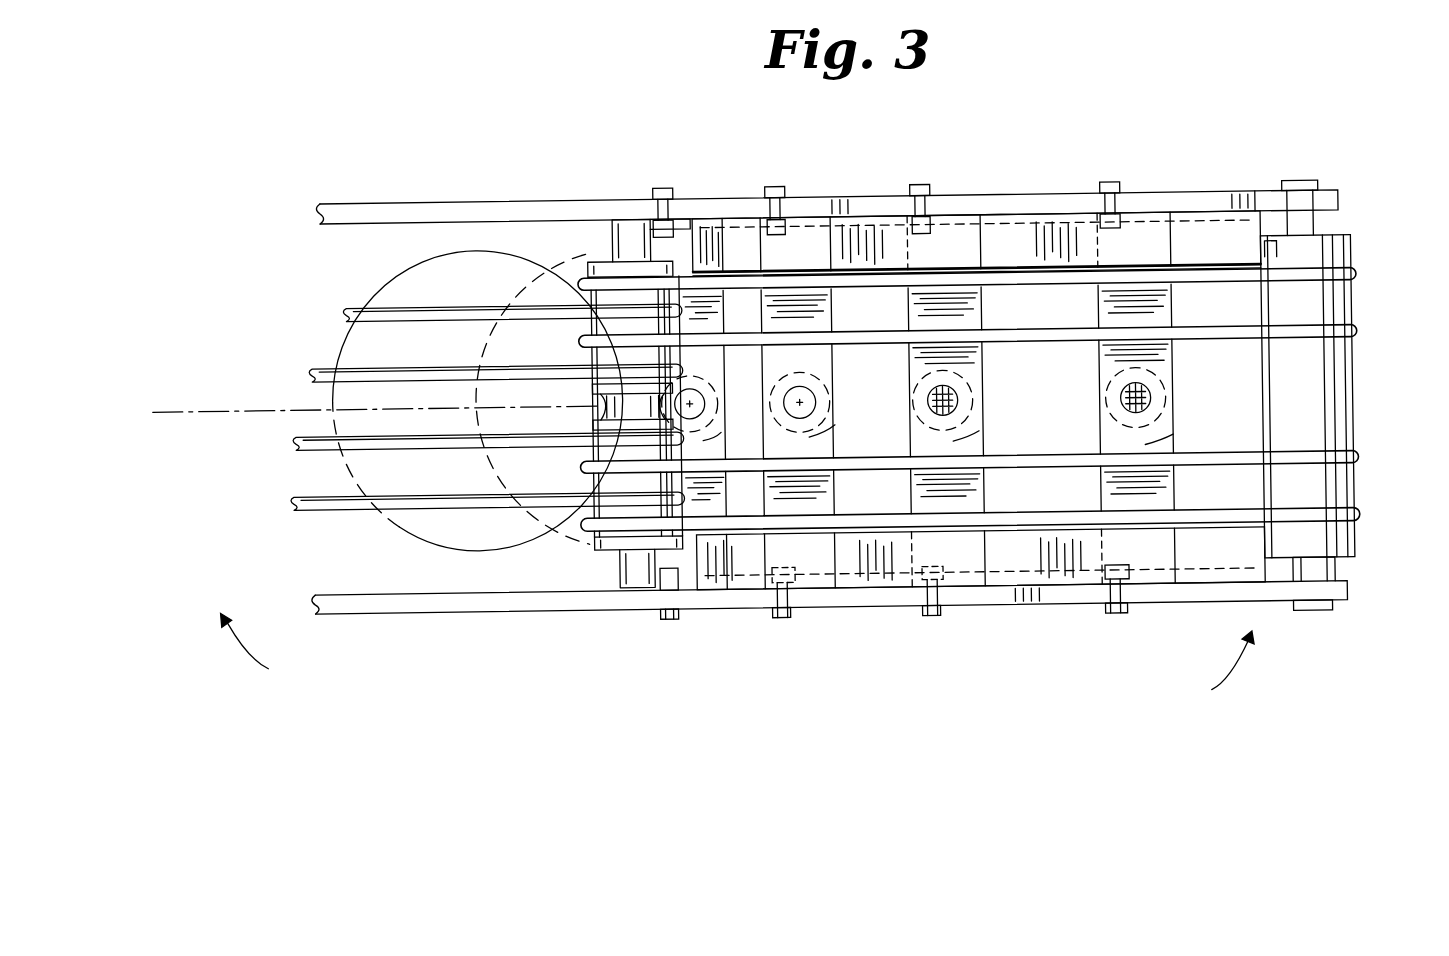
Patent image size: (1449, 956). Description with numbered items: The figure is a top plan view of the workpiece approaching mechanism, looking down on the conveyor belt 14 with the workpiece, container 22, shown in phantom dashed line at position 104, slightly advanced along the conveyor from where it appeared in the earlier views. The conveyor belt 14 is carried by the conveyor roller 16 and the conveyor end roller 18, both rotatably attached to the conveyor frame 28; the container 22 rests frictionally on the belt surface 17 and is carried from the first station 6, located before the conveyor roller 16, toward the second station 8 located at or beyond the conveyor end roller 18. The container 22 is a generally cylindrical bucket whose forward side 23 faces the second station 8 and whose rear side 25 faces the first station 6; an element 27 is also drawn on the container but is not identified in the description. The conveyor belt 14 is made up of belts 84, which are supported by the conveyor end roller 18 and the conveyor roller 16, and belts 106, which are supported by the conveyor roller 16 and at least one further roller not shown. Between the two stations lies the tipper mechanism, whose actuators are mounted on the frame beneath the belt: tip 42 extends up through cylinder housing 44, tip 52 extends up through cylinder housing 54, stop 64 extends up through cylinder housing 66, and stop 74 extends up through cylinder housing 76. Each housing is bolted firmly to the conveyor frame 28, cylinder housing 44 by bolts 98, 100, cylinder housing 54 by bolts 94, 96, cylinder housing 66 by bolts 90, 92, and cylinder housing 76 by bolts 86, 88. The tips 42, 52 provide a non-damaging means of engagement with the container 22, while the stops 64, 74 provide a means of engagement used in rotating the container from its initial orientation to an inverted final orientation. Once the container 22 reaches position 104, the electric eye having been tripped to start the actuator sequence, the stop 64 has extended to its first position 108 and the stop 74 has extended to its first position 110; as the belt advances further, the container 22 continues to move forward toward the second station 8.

The first station 6 is at (253, 649).
The second station 8 is at (1221, 667).
The conveyor belt 14 is at (1181, 190).
The conveyor roller 16 is at (633, 236).
The surface 17 is at (1010, 272).
The conveyor end roller 18 is at (1303, 227).
The container 22 is at (418, 204).
The forward side 23 is at (600, 390).
The rear side 25 is at (230, 420).
The hub 27 is at (494, 398).
The conveyor frame 28 is at (495, 597).
The tip 42 is at (691, 404).
The cylinder housing 44 is at (712, 444).
The tip 52 is at (801, 408).
The cylinder housing 54 is at (832, 440).
The stop 64 is at (947, 404).
The cylinder housing 66 is at (967, 450).
The stop 74 is at (1139, 404).
The cylinder housing 76 is at (1160, 454).
The belts 84 is at (1358, 334).
The bolt 86 is at (1112, 625).
The bolt 88 is at (1104, 194).
The bolt 90 is at (937, 624).
The bolt 92 is at (921, 192).
The bolt 94 is at (778, 624).
The bolt 96 is at (775, 192).
The bolt 98 is at (660, 625).
The bolt 100 is at (663, 193).
The position 104 is at (470, 252).
The belts 106 is at (316, 372).
The first position 108 is at (956, 412).
The first position 110 is at (1148, 416).